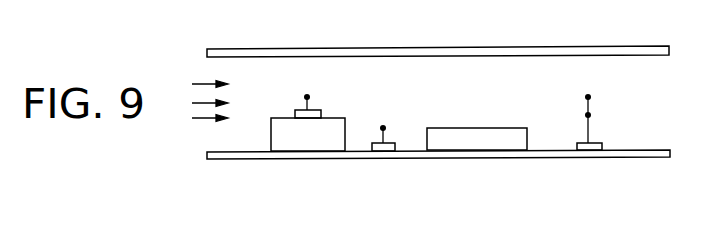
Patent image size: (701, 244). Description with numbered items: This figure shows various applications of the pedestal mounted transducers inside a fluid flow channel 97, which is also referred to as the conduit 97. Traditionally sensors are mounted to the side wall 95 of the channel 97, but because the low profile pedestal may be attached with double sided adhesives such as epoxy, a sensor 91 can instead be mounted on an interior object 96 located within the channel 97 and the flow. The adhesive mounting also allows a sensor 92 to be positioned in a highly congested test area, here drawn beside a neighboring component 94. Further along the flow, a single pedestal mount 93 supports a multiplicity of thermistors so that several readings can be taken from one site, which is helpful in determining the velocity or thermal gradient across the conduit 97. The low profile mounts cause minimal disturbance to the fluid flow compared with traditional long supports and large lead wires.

The sensor 91 is at (323, 120).
The sensor 92 is at (383, 159).
The pedestal mount 93 is at (580, 153).
The block component on substrate 94 is at (496, 119).
The side wall 95 is at (276, 47).
The interior object 96 is at (270, 147).
The channel 97 is at (394, 101).